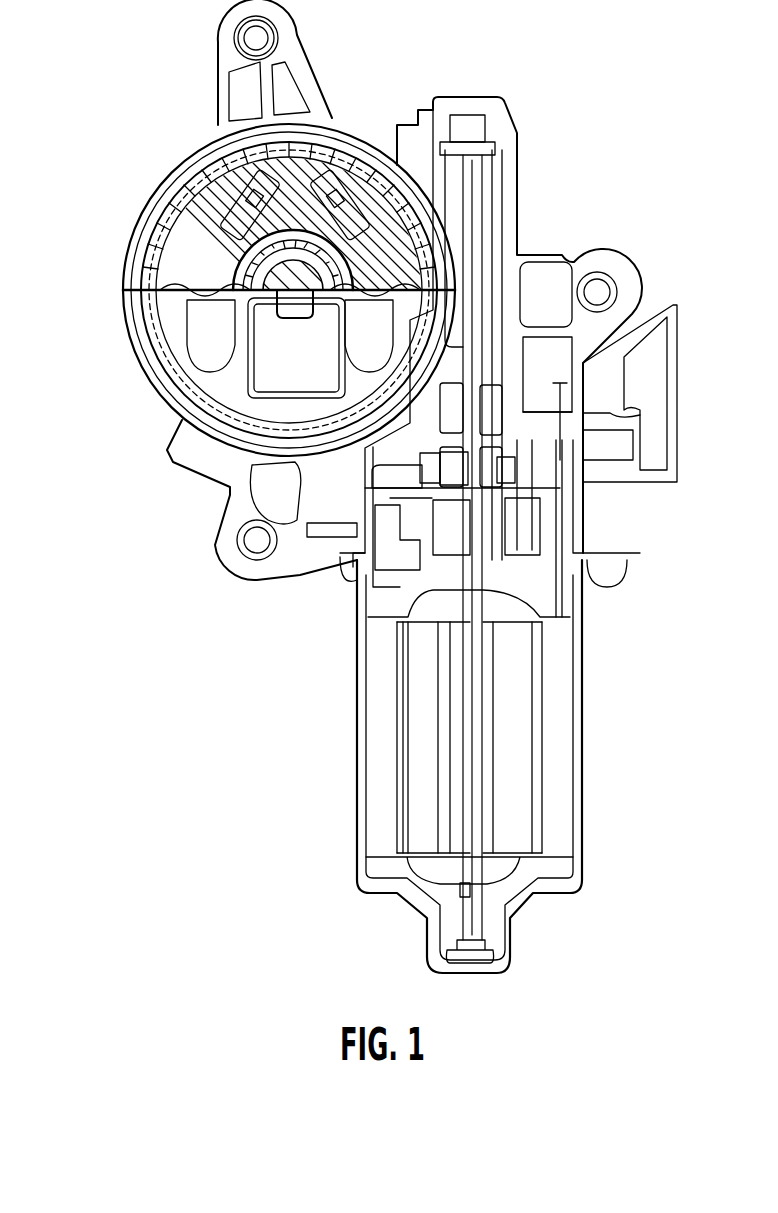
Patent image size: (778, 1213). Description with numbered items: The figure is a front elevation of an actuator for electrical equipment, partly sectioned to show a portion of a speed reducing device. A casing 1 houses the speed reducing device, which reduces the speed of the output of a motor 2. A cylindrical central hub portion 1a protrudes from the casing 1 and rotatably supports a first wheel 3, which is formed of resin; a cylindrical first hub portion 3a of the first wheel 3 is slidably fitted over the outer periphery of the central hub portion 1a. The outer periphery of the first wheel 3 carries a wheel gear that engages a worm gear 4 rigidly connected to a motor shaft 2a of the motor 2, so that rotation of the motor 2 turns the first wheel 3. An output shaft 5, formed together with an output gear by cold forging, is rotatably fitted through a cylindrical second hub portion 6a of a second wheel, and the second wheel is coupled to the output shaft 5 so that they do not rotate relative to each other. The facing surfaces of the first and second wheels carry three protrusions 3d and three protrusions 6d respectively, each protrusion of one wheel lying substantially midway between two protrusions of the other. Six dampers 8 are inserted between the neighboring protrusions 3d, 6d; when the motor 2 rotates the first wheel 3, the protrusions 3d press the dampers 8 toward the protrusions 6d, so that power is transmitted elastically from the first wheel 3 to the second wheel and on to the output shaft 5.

The casing 1 is at (131, 210).
The central hub portion 1a is at (305, 195).
The motor 2 is at (596, 670).
The motor shaft 2a is at (473, 208).
The first wheel 3 is at (192, 178).
The first hub portion 3a is at (325, 200).
The protrusions 3d is at (180, 270).
The worm gear 4 is at (490, 297).
The output shaft 5 is at (277, 292).
The second hub portion 6a is at (285, 282).
The protrusions 6d is at (248, 165).
The dampers 8 is at (200, 233).